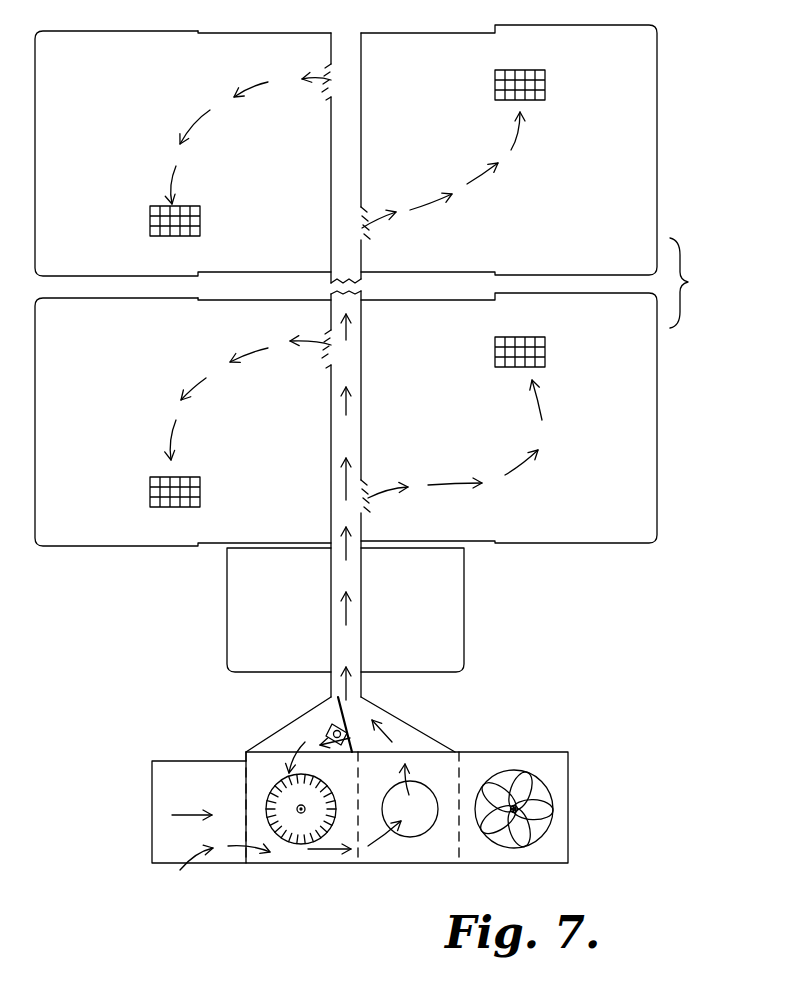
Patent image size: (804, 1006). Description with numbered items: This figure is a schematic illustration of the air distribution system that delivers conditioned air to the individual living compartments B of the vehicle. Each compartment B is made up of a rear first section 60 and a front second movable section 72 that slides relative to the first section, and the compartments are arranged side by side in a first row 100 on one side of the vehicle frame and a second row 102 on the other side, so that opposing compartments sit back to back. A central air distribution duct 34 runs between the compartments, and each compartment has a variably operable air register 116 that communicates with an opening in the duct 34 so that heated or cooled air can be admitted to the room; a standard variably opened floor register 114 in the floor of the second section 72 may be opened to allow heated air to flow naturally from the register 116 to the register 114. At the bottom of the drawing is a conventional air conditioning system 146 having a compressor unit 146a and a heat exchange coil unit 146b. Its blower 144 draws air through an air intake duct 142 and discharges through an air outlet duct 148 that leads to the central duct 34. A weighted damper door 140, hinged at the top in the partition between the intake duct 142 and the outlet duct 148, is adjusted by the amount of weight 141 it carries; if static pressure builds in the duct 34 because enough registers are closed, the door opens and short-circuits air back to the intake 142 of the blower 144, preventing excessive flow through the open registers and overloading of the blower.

The compartment B is at (658, 60).
The air distribution duct 34 is at (357, 402).
The first section 60 is at (487, 552).
The second movable section 72 is at (663, 400).
The first row 100 is at (627, 568).
The second row 102 is at (149, 555).
The floor register 114 is at (545, 352).
The air register 116 is at (368, 488).
The weighted damper door 140 is at (336, 722).
The weight 141 is at (345, 745).
The air intake duct 142 is at (287, 737).
The blower 144 is at (297, 846).
The air conditioning system 146 is at (440, 864).
The compressor unit 146a is at (570, 810).
The heat exchange coil unit 146b is at (400, 850).
The air outlet duct 148 is at (410, 736).